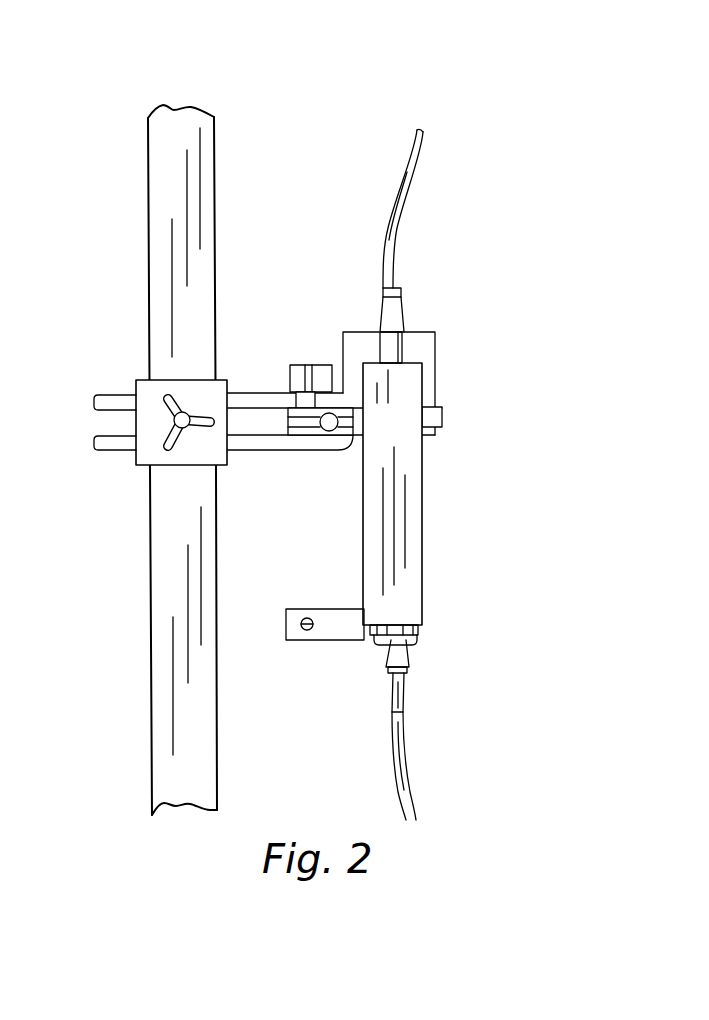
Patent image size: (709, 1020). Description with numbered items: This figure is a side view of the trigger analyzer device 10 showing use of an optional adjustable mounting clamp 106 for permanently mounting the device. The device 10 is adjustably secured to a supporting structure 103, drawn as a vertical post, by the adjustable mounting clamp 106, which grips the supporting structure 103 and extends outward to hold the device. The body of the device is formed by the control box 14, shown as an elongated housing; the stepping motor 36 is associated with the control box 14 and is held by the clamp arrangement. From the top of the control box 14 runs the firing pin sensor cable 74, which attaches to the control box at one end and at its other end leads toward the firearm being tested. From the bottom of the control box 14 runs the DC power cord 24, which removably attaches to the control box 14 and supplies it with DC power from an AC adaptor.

The trigger analyzer device 10 is at (505, 296).
The control box 14 is at (423, 547).
The DC power cord 24 is at (405, 753).
The stepping motor 36 is at (430, 350).
The firing pin sensor cable 74 is at (415, 182).
The supporting structure 103 is at (200, 206).
The adjustable mounting clamp 106 is at (243, 400).